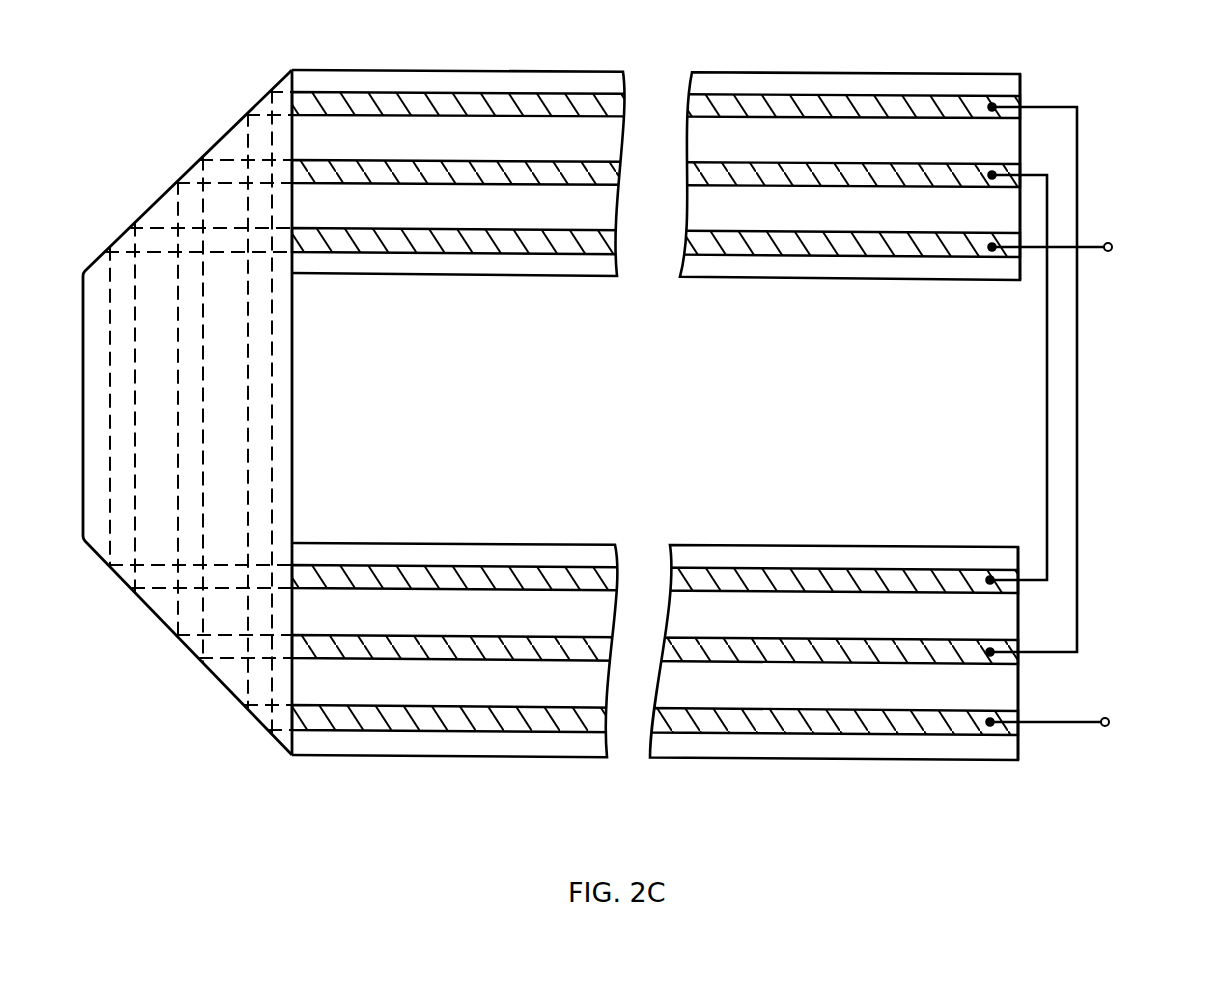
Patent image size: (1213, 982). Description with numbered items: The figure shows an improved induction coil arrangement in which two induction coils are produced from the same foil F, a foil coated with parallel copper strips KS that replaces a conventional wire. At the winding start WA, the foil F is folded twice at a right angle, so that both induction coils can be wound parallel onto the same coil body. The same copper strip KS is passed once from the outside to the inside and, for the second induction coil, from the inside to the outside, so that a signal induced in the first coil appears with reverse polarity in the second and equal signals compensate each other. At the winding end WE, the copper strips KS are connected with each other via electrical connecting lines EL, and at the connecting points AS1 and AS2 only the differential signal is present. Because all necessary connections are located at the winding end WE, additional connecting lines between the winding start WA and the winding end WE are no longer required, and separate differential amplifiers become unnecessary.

The winding start WA is at (295, 58).
The winding end WE is at (1115, 62).
The foil F is at (678, 750).
The copper strips KS is at (763, 582).
The electrical connecting line EL is at (1077, 422).
The connecting point AS1 is at (1079, 249).
The connecting point AS2 is at (1077, 728).